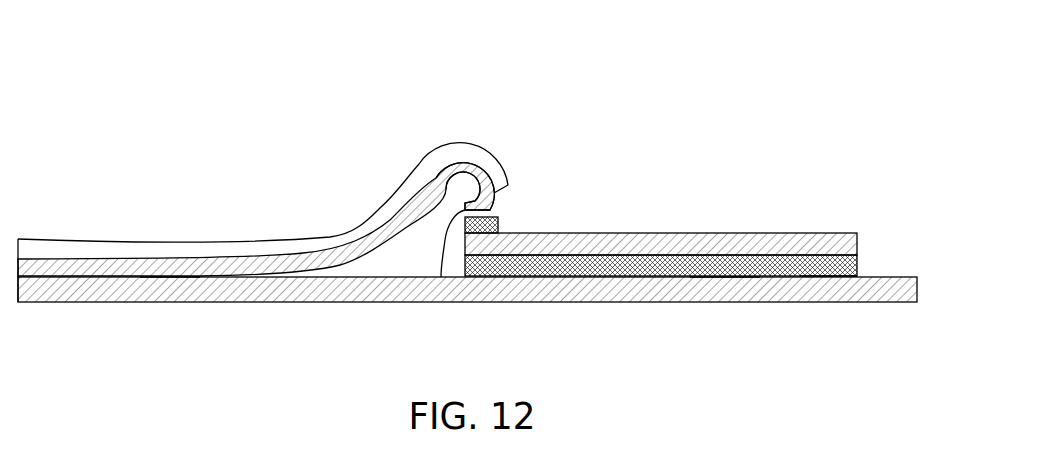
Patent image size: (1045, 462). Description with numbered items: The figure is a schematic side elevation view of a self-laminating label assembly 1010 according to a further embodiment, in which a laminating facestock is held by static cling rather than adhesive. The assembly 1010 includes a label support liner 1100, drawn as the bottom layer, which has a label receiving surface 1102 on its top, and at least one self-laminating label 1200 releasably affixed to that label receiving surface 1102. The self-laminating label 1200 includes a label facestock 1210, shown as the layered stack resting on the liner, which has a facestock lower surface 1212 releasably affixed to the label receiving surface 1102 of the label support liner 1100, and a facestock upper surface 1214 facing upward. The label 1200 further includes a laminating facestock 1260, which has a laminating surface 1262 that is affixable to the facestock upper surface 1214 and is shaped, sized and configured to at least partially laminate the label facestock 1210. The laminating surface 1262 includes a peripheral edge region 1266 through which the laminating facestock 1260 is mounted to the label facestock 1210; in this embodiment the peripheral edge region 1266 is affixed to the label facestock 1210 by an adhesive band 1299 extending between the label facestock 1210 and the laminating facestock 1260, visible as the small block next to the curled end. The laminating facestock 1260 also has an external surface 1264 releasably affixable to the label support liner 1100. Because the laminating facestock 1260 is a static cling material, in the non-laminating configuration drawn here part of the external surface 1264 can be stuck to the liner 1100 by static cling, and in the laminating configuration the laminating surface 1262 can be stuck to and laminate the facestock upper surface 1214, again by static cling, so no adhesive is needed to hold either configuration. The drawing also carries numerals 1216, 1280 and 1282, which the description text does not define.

The self-laminating label assembly 1010 is at (475, 186).
The label support liner 1100 is at (778, 292).
The label receiving surface 1102 is at (722, 277).
The self-laminating label 1200 is at (306, 212).
The label facestock 1210 is at (699, 263).
The facestock lower surface 1212 is at (843, 260).
The facestock upper surface 1214 is at (760, 232).
The bottom surface of display module 1216 is at (818, 268).
The laminating facestock 1260 is at (263, 224).
The laminating surface 1262 is at (303, 253).
The external surface 1264 is at (170, 278).
The peripheral edge region 1266 is at (441, 277).
The curved outer portion 1280 is at (472, 153).
The curved inner portion 1282 is at (393, 230).
The adhesive band 1299 is at (492, 224).